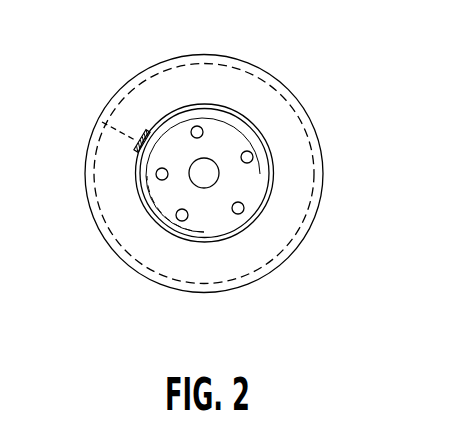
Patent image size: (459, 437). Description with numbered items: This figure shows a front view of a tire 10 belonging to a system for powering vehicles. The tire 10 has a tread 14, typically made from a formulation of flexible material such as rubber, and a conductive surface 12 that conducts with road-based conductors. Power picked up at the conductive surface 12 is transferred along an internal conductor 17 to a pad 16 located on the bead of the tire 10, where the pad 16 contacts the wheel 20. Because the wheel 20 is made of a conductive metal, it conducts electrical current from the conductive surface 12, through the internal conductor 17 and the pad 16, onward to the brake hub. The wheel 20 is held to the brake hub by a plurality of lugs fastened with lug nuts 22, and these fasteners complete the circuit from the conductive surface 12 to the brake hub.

The tire 10 is at (365, 52).
The conductive surface 12 is at (247, 70).
The tread 14 is at (325, 142).
The pad 16 is at (136, 147).
The internal conductor 17 is at (123, 132).
The wheel 20 is at (190, 240).
The lug nuts 22 is at (244, 206).